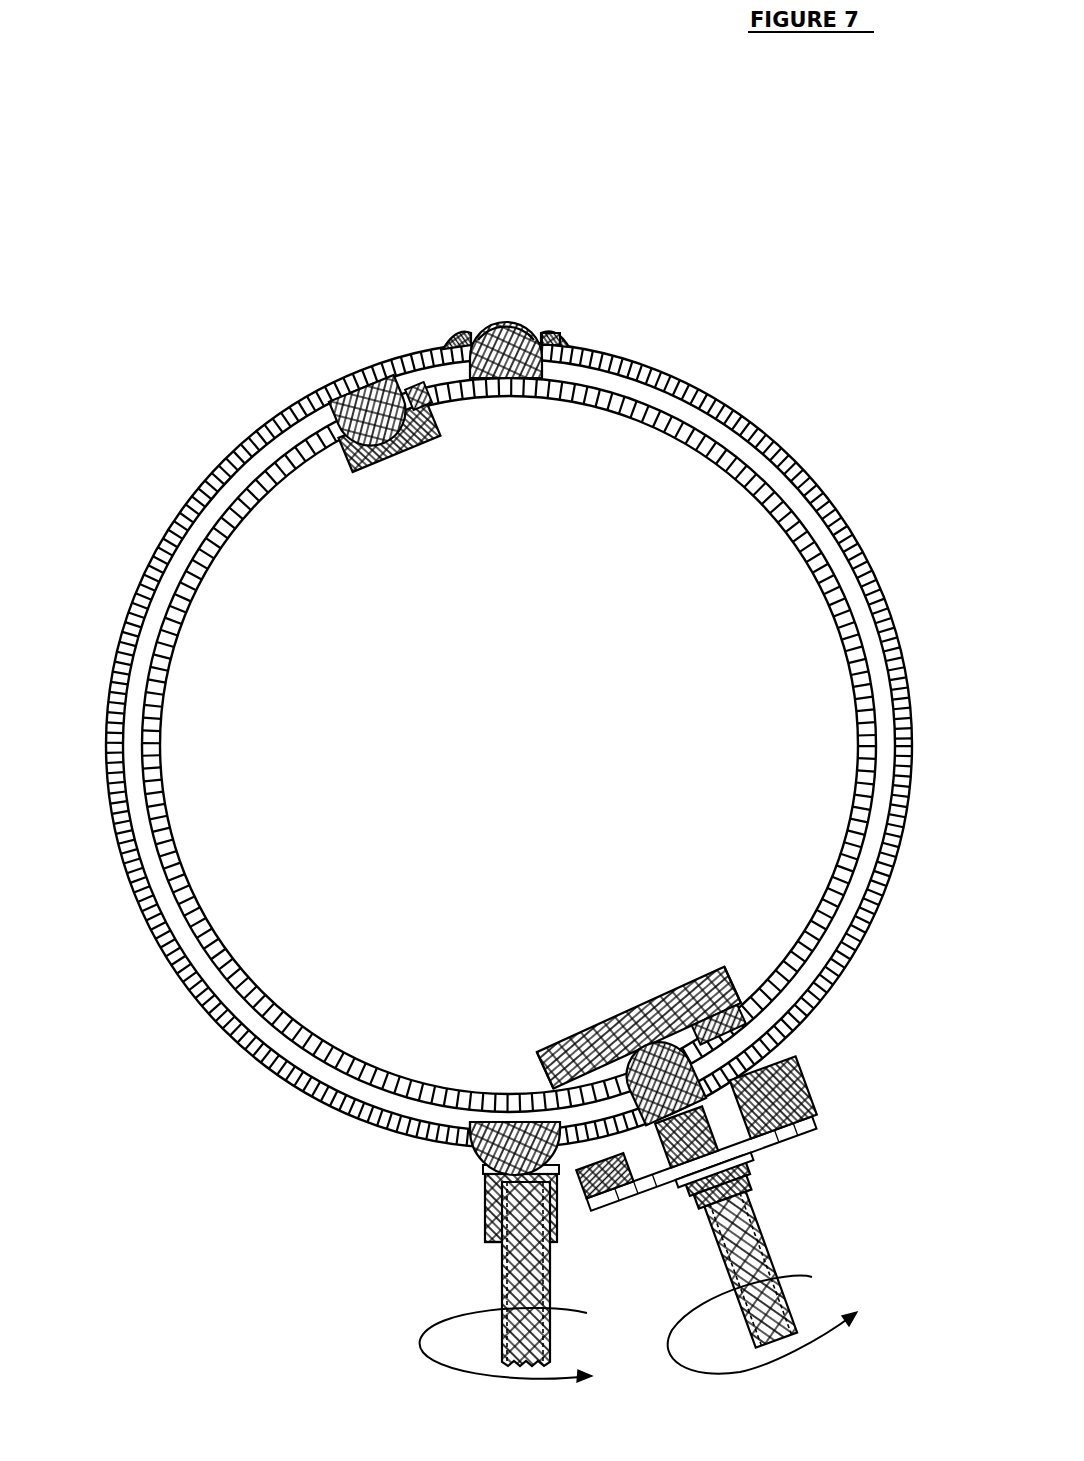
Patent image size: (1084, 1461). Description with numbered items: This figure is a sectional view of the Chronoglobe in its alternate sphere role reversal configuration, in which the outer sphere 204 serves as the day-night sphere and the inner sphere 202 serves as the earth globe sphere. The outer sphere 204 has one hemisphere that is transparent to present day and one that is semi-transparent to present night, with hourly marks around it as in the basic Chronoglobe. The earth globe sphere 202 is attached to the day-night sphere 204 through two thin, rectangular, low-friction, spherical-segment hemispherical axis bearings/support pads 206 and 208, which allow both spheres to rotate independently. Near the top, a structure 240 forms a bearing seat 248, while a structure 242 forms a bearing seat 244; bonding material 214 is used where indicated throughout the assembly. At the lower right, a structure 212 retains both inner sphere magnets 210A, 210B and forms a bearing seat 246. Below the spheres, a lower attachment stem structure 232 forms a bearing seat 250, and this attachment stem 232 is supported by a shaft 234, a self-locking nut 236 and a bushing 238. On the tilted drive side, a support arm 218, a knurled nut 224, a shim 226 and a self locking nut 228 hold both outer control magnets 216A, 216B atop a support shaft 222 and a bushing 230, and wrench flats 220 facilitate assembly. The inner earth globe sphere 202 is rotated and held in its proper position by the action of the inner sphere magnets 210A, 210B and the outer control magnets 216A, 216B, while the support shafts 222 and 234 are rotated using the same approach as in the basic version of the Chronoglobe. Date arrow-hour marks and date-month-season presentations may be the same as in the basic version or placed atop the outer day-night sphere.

The inner sphere 202 is at (178, 606).
The outer sphere 204 is at (728, 408).
The hemispherical axis bearing/support pad 206 is at (521, 1147).
The hemispherical axis bearing/support pad 208 is at (512, 362).
The inner sphere magnet 210A is at (570, 1057).
The inner sphere magnet 210B is at (713, 970).
The structure 212 is at (630, 1045).
The bonding material 214 is at (557, 333).
The outer control magnet 216A is at (607, 1175).
The outer control magnet 216B is at (795, 1077).
The support arm 218 is at (812, 1090).
The wrench flats 220 is at (763, 1130).
The support shaft 222 is at (750, 1272).
The knurled nut 224 is at (767, 1153).
The shim 226 is at (750, 1170).
The self locking nut 228 is at (752, 1200).
The bushing 230 is at (770, 1253).
The lower attachment stem structure 232 is at (490, 1180).
The shaft 234 is at (523, 1273).
The self-locking nut 236 is at (497, 1230).
The bushing 238 is at (493, 1292).
The structure 240 is at (470, 327).
The structure 242 is at (355, 448).
The bearing seat 244 is at (402, 447).
The bearing seat 246 is at (663, 1047).
The bearing seat 248 is at (517, 327).
The bearing seat 250 is at (480, 1172).